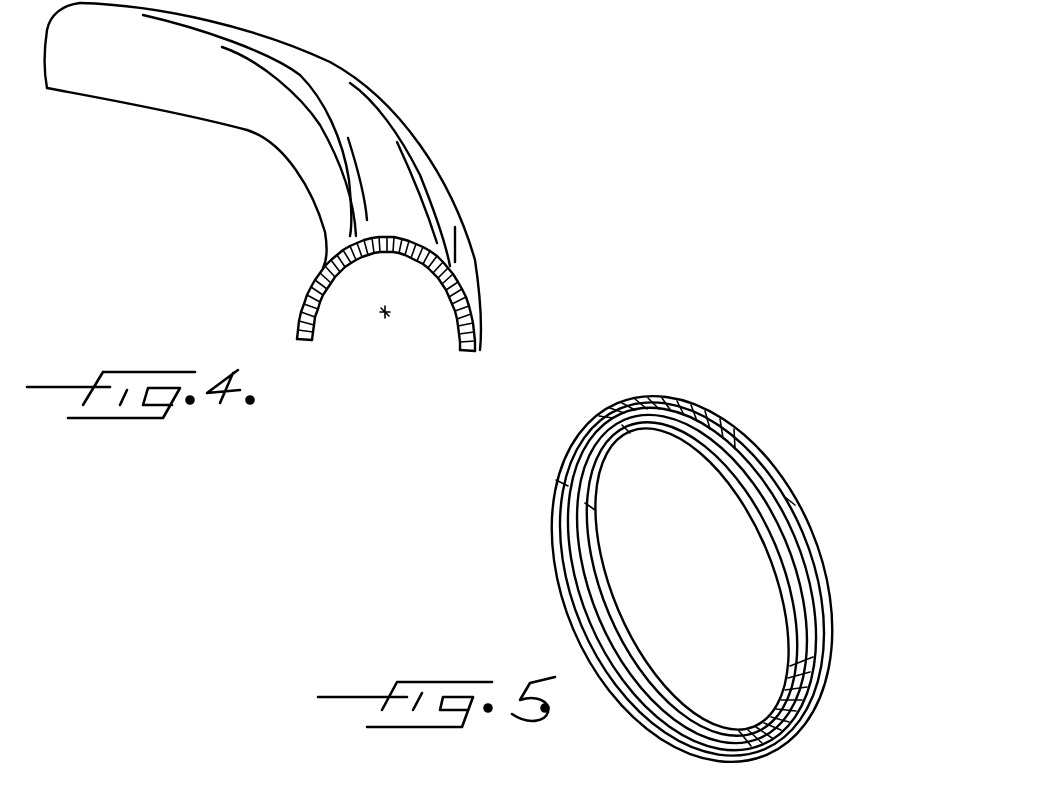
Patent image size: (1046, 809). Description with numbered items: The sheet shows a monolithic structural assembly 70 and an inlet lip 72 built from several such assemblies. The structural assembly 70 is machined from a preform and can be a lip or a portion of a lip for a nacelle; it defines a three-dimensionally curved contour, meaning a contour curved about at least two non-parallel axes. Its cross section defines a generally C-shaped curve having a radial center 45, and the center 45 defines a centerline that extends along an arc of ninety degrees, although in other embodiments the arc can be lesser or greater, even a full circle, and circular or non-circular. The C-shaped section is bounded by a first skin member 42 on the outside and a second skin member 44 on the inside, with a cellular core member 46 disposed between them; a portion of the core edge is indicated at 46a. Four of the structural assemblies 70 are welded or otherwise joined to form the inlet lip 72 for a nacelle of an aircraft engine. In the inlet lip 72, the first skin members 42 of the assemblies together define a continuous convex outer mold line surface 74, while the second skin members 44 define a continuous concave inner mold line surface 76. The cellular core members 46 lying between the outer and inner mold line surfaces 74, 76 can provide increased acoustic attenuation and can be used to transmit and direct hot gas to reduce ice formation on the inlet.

In FIG. 4, the structural assembly 70 is at (490, 153).
In FIG. 5, the structural assembly 70 is at (722, 408).
In FIG. 4, the first skin member 42 is at (470, 283).
In FIG. 5, the first skin member 42 is at (760, 458).
In FIG. 4, the second skin member 44 is at (317, 337).
In FIG. 5, the second skin member 44 is at (735, 480).
In FIG. 4, the radial center 45 is at (386, 313).
In FIG. 4, the cellular core member 46 is at (470, 357).
In FIG. 5, the cellular core member 46 is at (592, 512).
In FIG. 5, the inlet lip 72 is at (512, 571).
In FIG. 5, the outer mold line surface 74 is at (792, 507).
In FIG. 5, the inner mold line surface 76 is at (590, 608).
In FIG. 5, the edge 46a is at (318, 798).